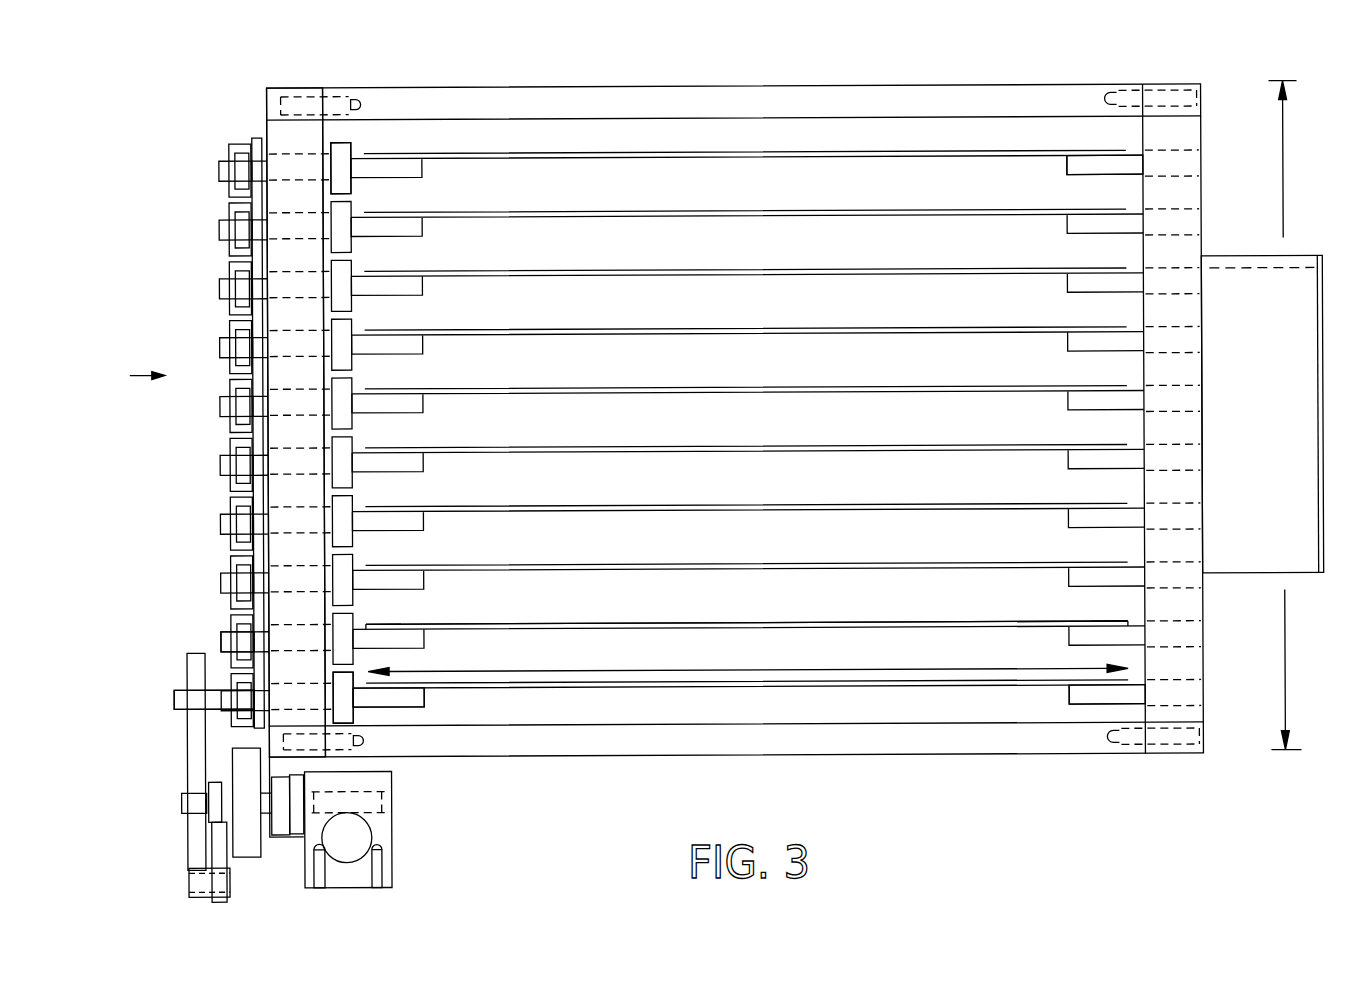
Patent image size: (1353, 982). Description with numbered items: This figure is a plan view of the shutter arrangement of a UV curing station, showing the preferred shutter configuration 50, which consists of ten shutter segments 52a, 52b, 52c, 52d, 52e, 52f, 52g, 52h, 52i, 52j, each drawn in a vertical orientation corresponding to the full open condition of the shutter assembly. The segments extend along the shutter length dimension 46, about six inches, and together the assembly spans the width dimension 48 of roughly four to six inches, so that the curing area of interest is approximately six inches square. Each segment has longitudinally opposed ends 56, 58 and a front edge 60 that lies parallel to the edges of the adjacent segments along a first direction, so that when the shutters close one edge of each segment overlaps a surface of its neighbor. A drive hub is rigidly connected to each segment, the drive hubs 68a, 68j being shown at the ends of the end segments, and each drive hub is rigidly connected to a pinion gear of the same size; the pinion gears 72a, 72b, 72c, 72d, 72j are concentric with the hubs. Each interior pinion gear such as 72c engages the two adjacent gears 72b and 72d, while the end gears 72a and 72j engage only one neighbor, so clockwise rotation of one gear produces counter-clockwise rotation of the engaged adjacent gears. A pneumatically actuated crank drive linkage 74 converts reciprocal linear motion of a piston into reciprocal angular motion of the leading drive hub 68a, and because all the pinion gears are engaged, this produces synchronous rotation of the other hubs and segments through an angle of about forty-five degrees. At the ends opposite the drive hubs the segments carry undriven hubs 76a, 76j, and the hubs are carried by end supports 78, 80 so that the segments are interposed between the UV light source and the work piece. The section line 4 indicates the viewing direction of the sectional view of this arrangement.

The section line 4- 4 is at (160, 375).
The shutter length dimension 46 is at (1090, 668).
The width dimension 48 is at (1283, 624).
The shutter configuration 50 is at (657, 152).
The shutter segment 52a is at (737, 688).
The shutter segment 52b is at (733, 629).
The shutter segment 52c is at (730, 570).
The shutter segment 52d is at (720, 511).
The shutter segment 52e is at (718, 452).
The shutter segment 52f is at (715, 393).
The shutter segment 52g is at (713, 334).
The shutter segment 52h is at (713, 276).
The shutter segment 52i is at (710, 217).
The shutter segment 52j is at (705, 158).
The longitudinally opposed end 56 is at (367, 627).
The longitudinally opposed end 58 is at (1128, 626).
The front edge 60 is at (528, 623).
The drive hub 68a is at (398, 702).
The drive hub 68j is at (385, 168).
The pinion gear 72a is at (260, 728).
The pinion gear 72b is at (258, 618).
The pinion gear 72c is at (258, 560).
The pinion gear 72d is at (262, 494).
The pinion gear 72j is at (258, 137).
The crank drive linkage 74 is at (220, 642).
The undriven hub 76a is at (1098, 702).
The undriven hub 76j is at (1133, 153).
The end support 78 is at (267, 130).
The end support 80 is at (1203, 122).